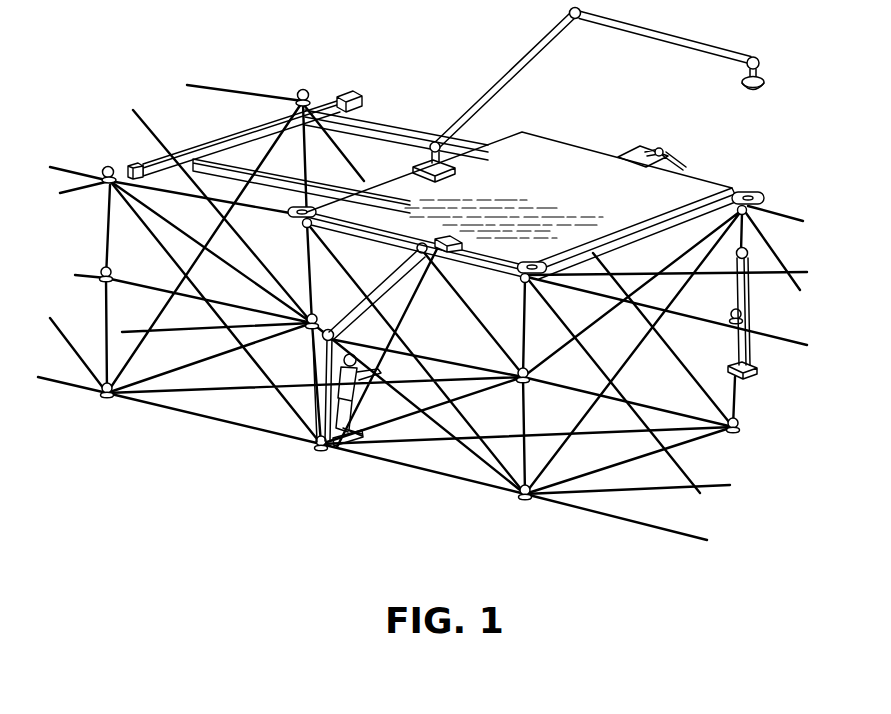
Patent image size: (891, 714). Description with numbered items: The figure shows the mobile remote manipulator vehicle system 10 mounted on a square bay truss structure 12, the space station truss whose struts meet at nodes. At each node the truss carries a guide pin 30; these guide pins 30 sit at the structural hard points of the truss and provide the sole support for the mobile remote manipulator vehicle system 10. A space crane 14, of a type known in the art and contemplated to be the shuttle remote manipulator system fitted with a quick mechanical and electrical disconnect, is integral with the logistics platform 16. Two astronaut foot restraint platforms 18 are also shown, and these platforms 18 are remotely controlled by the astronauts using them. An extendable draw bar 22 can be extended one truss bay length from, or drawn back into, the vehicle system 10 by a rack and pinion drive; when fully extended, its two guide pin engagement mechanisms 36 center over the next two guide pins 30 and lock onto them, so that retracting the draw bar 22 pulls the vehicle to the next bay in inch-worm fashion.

The mobile remote manipulator vehicle system 10 is at (780, 165).
The square bay truss structure 12 is at (215, 420).
The space crane 14 is at (693, 41).
The logistics platform 16 is at (556, 152).
The astronaut foot restraint platforms 18 is at (750, 304).
The extendable draw bar 22 is at (235, 137).
The truss guide pins 30 is at (303, 89).
The guide pin engagement mechanisms 36 is at (352, 92).